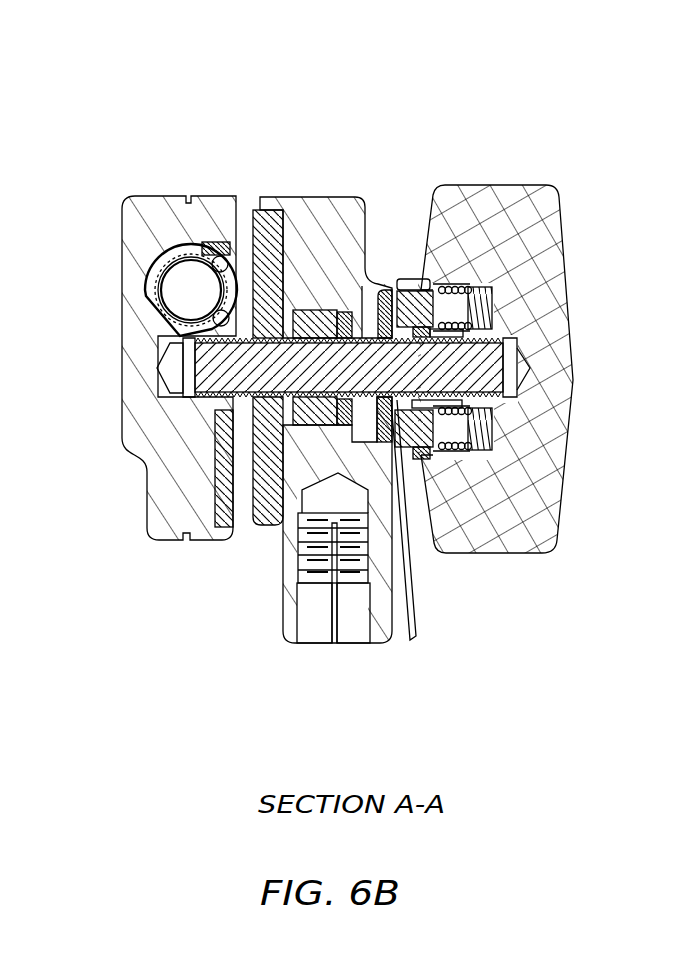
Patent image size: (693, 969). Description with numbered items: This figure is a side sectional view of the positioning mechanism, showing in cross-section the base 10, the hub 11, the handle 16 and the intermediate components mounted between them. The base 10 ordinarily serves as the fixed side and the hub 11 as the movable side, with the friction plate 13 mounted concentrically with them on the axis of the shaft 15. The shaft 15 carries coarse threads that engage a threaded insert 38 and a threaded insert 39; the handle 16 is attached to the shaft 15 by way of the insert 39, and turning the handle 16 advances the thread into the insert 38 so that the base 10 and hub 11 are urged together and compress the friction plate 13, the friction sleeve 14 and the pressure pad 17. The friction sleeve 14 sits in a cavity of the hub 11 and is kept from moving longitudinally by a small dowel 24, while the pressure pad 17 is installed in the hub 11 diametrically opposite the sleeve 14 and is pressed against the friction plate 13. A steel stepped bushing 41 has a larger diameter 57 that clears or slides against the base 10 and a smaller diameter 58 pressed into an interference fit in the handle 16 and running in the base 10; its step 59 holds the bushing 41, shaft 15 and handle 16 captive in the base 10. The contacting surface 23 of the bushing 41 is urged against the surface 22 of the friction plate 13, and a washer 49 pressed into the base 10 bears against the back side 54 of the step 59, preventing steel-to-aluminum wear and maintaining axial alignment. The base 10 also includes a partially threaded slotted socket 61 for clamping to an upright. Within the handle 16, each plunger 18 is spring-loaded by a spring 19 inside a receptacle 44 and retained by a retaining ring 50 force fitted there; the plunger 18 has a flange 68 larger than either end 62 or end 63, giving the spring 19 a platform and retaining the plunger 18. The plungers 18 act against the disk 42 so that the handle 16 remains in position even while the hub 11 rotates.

The base 10 is at (283, 635).
The hub 11 is at (147, 240).
The friction plate 13 is at (263, 513).
The friction sleeve 14 is at (143, 270).
The shaft 15 is at (205, 358).
The handle 16 is at (552, 440).
The pressure pad 17 is at (215, 438).
The plunger 18 is at (470, 315).
The spring 19 is at (492, 295).
The surface of the friction plate 22 is at (283, 470).
The contacting surface 23 is at (285, 398).
The dowel 24 is at (210, 237).
The threaded insert 38 is at (178, 382).
The threaded insert 39 is at (510, 340).
The stepped bushing 41 is at (298, 312).
The disk 42 is at (414, 636).
The receptacle 44 is at (500, 275).
The washer 49 is at (340, 432).
The retaining ring 50 is at (428, 278).
The back side of the step 54 is at (345, 320).
The larger diameter 57 is at (322, 298).
The smaller diameter 58 is at (372, 327).
The step 59 is at (380, 397).
The slotted socket 61 is at (332, 662).
The end of the plunger 62 is at (403, 277).
The end of the plunger 63 is at (470, 283).
The flange 68 is at (441, 276).